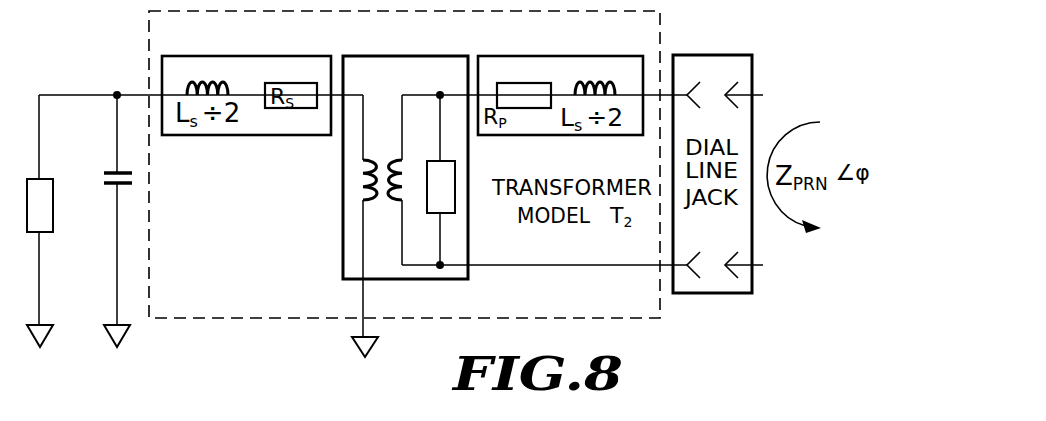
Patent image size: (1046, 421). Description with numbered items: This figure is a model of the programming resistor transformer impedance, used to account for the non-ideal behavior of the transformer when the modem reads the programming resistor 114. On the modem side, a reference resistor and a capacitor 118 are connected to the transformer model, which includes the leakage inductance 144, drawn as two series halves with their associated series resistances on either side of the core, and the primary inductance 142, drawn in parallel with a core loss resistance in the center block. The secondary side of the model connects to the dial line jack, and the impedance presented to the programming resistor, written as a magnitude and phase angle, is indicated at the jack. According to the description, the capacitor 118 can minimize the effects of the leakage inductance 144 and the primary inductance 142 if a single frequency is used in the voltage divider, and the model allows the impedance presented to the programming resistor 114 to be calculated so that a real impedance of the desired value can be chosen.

The leakage inductance 144 is at (227, 81).
The capacitor 118 is at (115, 172).
The programming resistor 114 is at (51, 233).
The primary inductance 142 is at (383, 232).